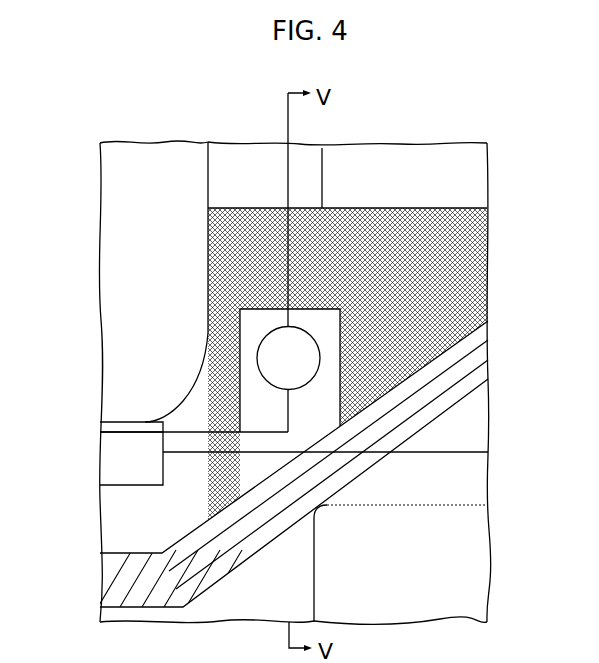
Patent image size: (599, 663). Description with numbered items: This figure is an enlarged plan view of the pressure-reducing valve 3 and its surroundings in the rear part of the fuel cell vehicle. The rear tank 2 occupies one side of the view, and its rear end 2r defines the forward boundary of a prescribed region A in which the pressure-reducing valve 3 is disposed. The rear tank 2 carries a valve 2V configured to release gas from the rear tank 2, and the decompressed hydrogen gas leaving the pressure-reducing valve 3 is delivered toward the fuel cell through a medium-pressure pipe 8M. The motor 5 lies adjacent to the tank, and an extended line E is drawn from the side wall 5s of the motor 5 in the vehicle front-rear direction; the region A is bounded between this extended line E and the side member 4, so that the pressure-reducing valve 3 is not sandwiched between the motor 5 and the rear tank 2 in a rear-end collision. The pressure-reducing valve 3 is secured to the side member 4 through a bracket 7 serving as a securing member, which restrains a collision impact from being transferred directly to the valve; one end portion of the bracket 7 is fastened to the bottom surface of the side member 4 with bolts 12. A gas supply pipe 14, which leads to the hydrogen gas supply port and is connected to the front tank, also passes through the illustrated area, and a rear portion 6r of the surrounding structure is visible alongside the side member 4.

The rear tank 2 is at (177, 170).
The rear end of the rear tank 2r is at (208, 163).
The valve 2V is at (123, 460).
The pressure-reducing valve 3 is at (318, 340).
The side member 4 is at (485, 355).
The motor 5 is at (407, 167).
The side wall of the motor 5s is at (447, 212).
The rear portion 6r is at (447, 505).
The bracket 7 is at (245, 478).
The medium-pressure pipe 8M is at (100, 438).
The bolts 12 is at (348, 490).
The gas supply pipe 14 is at (447, 452).
The extended line E is at (268, 205).
The region A is at (393, 294).